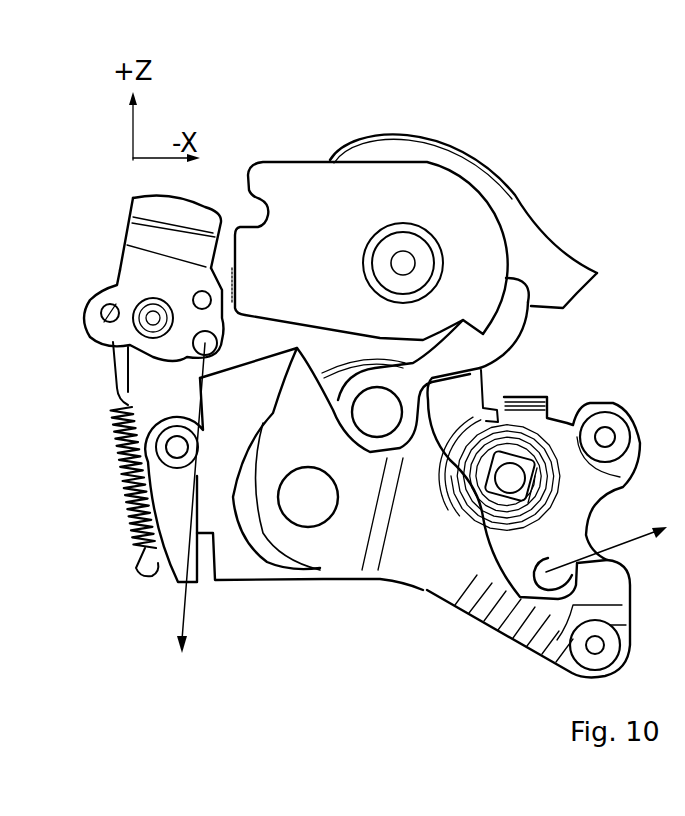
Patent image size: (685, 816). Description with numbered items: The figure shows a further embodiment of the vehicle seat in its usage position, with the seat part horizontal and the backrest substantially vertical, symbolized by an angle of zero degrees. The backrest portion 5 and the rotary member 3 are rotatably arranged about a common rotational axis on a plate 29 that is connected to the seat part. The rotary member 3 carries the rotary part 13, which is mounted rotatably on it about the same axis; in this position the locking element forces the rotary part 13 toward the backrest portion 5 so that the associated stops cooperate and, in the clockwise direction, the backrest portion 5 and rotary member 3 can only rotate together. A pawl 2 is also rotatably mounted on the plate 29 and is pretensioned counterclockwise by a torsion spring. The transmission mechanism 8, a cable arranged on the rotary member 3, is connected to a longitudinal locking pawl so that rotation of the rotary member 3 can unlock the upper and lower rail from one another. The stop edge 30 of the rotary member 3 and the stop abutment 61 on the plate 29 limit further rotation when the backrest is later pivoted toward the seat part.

The pawl 2 is at (500, 562).
The rotary member 3 is at (510, 218).
The backrest portion 5 is at (280, 178).
The transmission mechanism 8 is at (182, 607).
The rotary part 13 is at (503, 325).
The plate 29 is at (340, 583).
The stop edge 30 is at (586, 296).
The stop abutment 61 is at (562, 394).